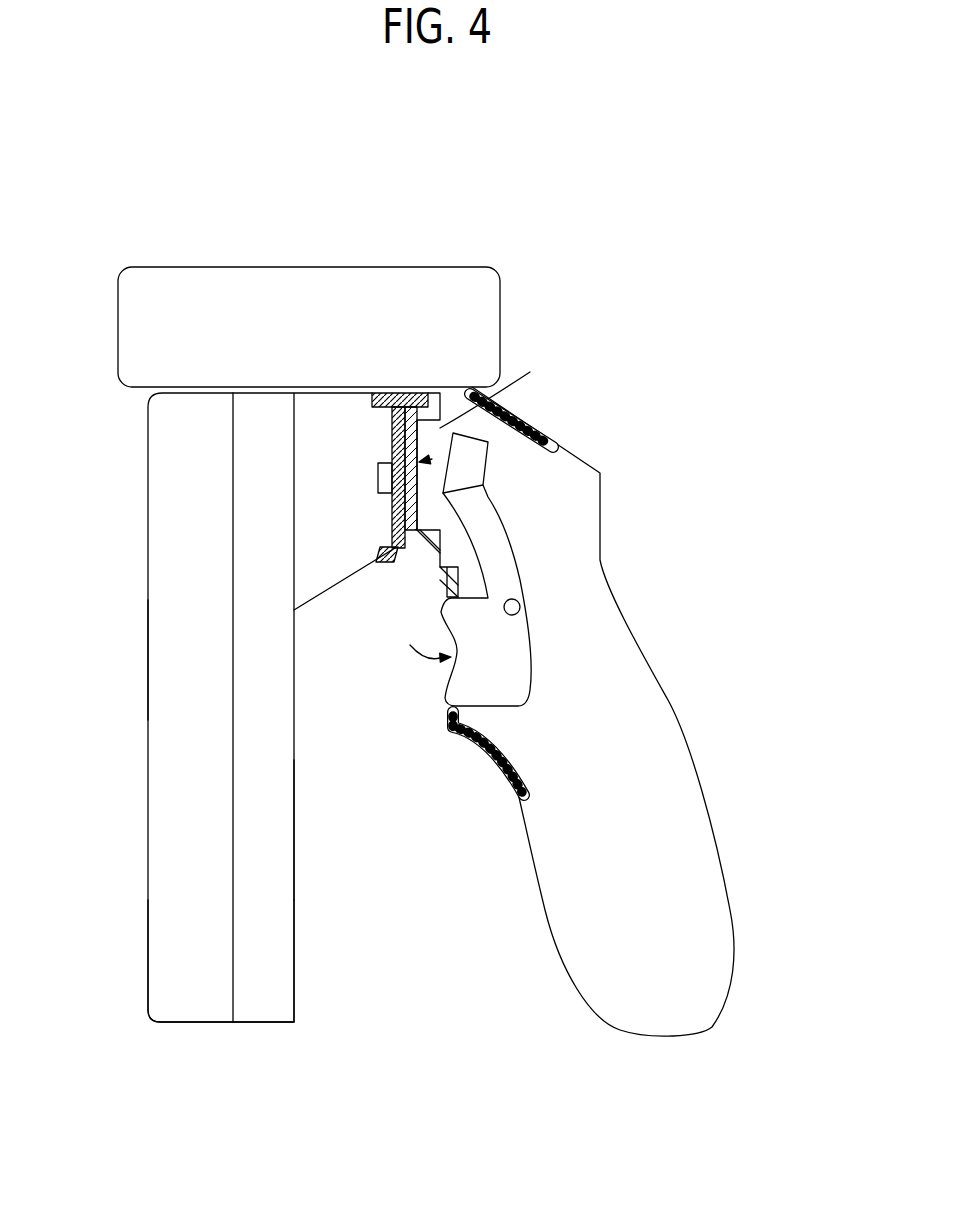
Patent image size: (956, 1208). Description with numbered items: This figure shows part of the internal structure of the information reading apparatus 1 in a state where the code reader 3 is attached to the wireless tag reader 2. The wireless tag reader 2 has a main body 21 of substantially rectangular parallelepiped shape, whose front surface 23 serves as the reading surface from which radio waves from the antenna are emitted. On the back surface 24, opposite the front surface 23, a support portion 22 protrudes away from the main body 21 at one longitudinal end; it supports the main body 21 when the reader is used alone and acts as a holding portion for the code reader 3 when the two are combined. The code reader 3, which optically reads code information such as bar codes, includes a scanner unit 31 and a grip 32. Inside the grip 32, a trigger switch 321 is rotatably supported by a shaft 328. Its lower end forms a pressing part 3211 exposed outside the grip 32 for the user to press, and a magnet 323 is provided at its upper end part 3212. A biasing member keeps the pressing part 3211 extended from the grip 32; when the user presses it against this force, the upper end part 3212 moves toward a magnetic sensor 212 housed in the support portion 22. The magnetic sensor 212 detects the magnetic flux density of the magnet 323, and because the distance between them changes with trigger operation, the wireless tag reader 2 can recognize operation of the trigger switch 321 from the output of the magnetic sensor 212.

The information reading apparatus 1 is at (583, 175).
The wireless tag reader 2 is at (137, 488).
The main body 21 is at (148, 911).
The support portion 22 is at (322, 597).
The front surface 23 is at (148, 671).
The back surface 24 is at (296, 826).
The magnetic sensor 212 is at (380, 493).
The code reader 3 is at (604, 392).
The scanner unit 31 is at (207, 266).
The grip 32 is at (575, 684).
The trigger switch 321 is at (586, 569).
The pressing part 3211 is at (445, 718).
The upper end part 3212 is at (483, 468).
The magnet 323 is at (483, 402).
The shaft 328 is at (519, 607).